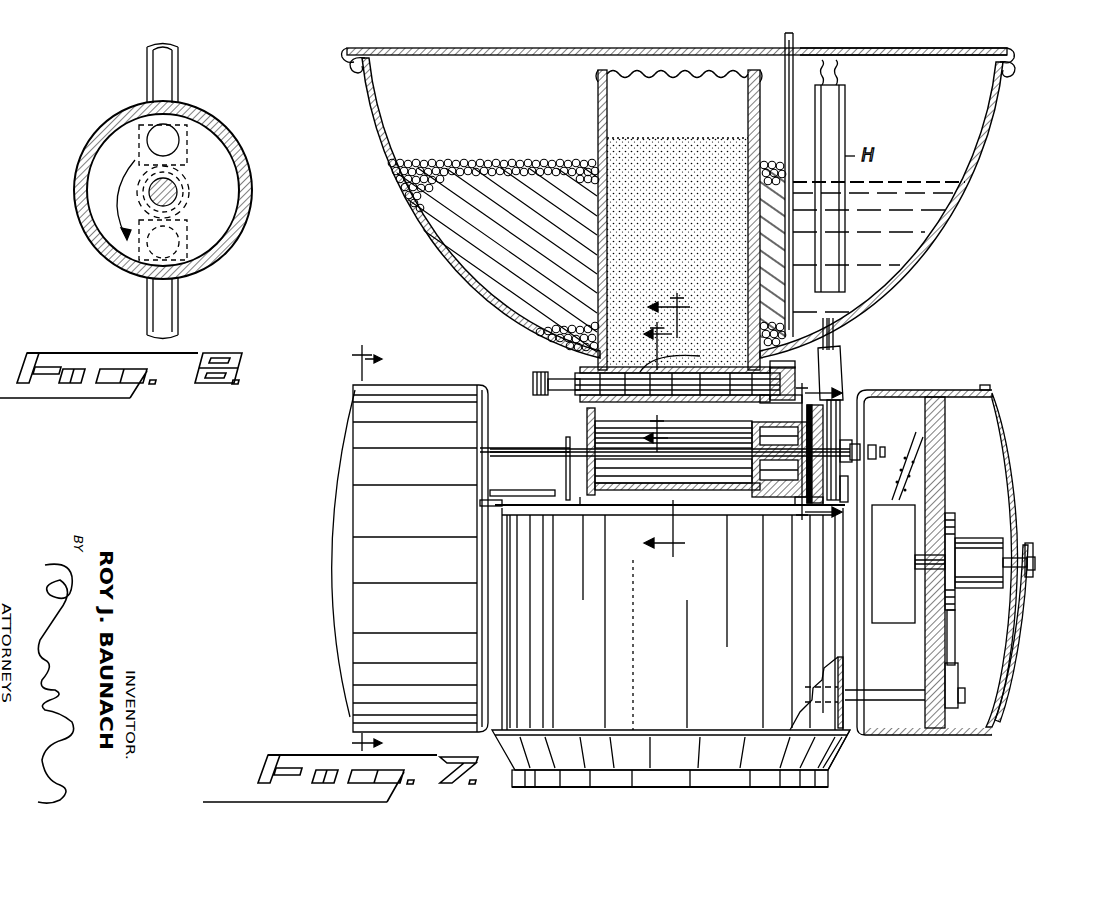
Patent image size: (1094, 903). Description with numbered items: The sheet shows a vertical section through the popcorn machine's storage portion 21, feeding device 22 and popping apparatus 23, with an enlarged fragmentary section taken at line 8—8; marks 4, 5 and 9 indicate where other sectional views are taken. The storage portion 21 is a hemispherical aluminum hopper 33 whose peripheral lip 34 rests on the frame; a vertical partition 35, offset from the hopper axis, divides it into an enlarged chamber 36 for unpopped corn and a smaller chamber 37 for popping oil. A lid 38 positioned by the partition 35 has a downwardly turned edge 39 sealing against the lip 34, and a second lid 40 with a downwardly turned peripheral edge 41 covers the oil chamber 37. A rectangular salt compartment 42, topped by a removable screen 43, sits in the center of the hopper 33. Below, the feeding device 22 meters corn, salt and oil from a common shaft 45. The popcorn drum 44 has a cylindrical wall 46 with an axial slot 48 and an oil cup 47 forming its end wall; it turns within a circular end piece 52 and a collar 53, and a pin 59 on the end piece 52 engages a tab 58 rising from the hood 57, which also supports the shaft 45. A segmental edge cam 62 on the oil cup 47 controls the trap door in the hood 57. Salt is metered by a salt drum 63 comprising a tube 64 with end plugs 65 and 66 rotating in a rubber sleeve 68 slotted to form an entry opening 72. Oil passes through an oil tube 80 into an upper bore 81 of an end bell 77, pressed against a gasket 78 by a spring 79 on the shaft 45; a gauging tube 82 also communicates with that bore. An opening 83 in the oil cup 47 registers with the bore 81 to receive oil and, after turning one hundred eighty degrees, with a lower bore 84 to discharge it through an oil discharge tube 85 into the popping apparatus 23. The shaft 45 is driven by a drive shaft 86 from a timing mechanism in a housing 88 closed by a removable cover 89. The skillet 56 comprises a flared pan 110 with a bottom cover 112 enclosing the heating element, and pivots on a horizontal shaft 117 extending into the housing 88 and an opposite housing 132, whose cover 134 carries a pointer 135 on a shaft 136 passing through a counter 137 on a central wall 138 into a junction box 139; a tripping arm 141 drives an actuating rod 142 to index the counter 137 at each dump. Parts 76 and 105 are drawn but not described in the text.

In FIG. 7, the storage portion 21 is at (982, 248).
In FIG. 7, the feeding device 22 is at (888, 366).
In FIG. 7, the popping apparatus 23 is at (840, 776).
In FIG. 7, the hopper 33 is at (412, 222).
In FIG. 7, the peripheral lip 34 is at (350, 68).
In FIG. 7, the partition 35 is at (793, 120).
In FIG. 7, the enlarged chamber 36 is at (468, 106).
In FIG. 7, the smaller chamber 37 is at (874, 107).
In FIG. 7, the lid 38 is at (478, 48).
In FIG. 7, the downwardly turned edge 39 is at (343, 50).
In FIG. 7, the lid 40 is at (878, 48).
In FIG. 7, the downwardly turned peripheral edge 41 is at (1010, 52).
In FIG. 7, the salt compartment 42 is at (598, 104).
In FIG. 7, the screen 43 is at (722, 78).
In FIG. 7, the drum 44 is at (702, 492).
In FIG. 7, the shaft 45 is at (710, 457).
In FIG. 8, the shaft 45 is at (180, 190).
In FIG. 7, the cylindrical wall 46 is at (641, 483).
In FIG. 7, the oil cup 47 is at (742, 425).
In FIG. 8, the oil cup 47 is at (250, 190).
In FIG. 7, the axial slot 48 is at (648, 402).
In FIG. 7, the circular end piece 52 is at (587, 416).
In FIG. 7, the collar 53 is at (762, 498).
In FIG. 7, the skillet 56 is at (758, 787).
In FIG. 7, the hood 57 is at (496, 505).
In FIG. 7, the tab 58 is at (566, 464).
In FIG. 7, the pin 59 is at (582, 506).
In FIG. 7, the edge cam 62 is at (843, 376).
In FIG. 7, the salt drum 63 is at (728, 362).
In FIG. 7, the tube 64 is at (692, 402).
In FIG. 7, the end plug 65 is at (780, 394).
In FIG. 7, the end plug 66 is at (546, 374).
In FIG. 7, the sleeve 68 is at (745, 402).
In FIG. 7, the entry opening 72 is at (660, 362).
In FIG. 7, the flange 76 is at (762, 364).
In FIG. 7, the end bell 77 is at (825, 412).
In FIG. 7, the gasket 78 is at (806, 505).
In FIG. 7, the spring 79 is at (868, 440).
In FIG. 7, the oil tube 80 is at (838, 345).
In FIG. 8, the oil tube 80 is at (180, 70).
In FIG. 7, the upper horizontal bore 81 is at (852, 428).
In FIG. 7, the gauging tube 82 is at (790, 470).
In FIG. 8, the gauging tube 82 is at (112, 201).
In FIG. 7, the opening 83 is at (795, 436).
In FIG. 8, the opening 83 is at (172, 148).
In FIG. 7, the lower bore 84 is at (842, 475).
In FIG. 8, the lower bore 84 is at (178, 238).
In FIG. 7, the oil discharge tube 85 is at (850, 490).
In FIG. 8, the oil discharge tube 85 is at (180, 312).
In FIG. 7, the drive shaft 86 is at (540, 448).
In FIG. 7, the housing 88 is at (435, 385).
In FIG. 7, the removable cover 89 is at (326, 481).
In FIG. 7, the bar 105 is at (535, 490).
In FIG. 7, the pan 110 is at (848, 748).
In FIG. 7, the bottom cover 112 is at (572, 788).
In FIG. 7, the shaft 117 is at (875, 702).
In FIG. 7, the housing 132 is at (935, 390).
In FIG. 7, the cover 134 is at (1016, 450).
In FIG. 7, the pointer 135 is at (1027, 642).
In FIG. 7, the shaft 136 is at (1030, 545).
In FIG. 7, the counter 137 is at (992, 538).
In FIG. 7, the wall 138 is at (945, 447).
In FIG. 7, the junction box 139 is at (900, 623).
In FIG. 7, the tripping arm 141 is at (962, 680).
In FIG. 7, the actuating rod 142 is at (957, 645).
In FIG. 7, the section line 4 is at (658, 425).
In FIG. 7, the section line 5 is at (650, 387).
In FIG. 7, the section line 8— 8 is at (828, 451).
In FIG. 7, the section line 9 is at (375, 549).